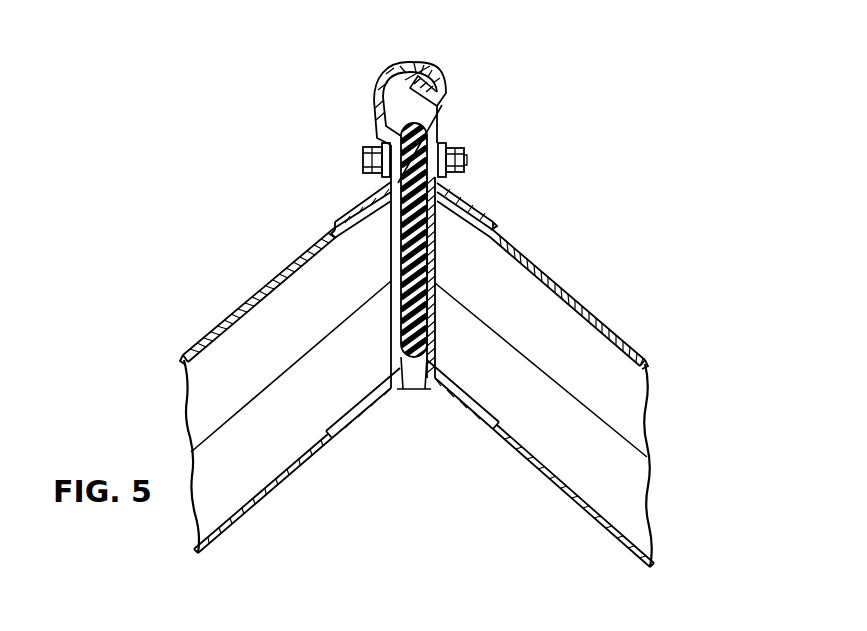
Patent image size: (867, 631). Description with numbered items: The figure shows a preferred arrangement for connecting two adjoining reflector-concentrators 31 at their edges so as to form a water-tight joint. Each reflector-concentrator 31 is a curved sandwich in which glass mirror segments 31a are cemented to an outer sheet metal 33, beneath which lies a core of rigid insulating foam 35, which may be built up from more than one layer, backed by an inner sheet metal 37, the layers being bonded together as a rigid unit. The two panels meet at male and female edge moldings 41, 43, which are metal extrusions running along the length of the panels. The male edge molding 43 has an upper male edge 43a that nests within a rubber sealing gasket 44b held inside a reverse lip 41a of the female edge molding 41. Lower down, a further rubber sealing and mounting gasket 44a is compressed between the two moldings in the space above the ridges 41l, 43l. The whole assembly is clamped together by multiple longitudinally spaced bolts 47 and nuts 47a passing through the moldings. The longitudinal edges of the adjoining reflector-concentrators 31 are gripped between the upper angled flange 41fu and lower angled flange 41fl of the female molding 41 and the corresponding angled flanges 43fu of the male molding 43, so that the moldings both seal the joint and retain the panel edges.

The reflector-concentrator 31 is at (210, 328).
The glass mirror segment 31a is at (303, 247).
The sheet metal 33 is at (645, 372).
The rigid insulating foam 35 is at (641, 490).
The sheet metal 37 is at (607, 533).
The female edge molding 41 is at (378, 108).
The reverse lip 41a is at (448, 90).
The upper angled flange 41fu is at (357, 210).
The lower angled flange 41fl is at (348, 437).
The ridge 41l is at (408, 390).
The male edge molding 43 is at (438, 133).
The upper male edge 43a is at (397, 88).
The upper angled flange 43fu is at (484, 222).
The ridge 43l is at (427, 385).
The rubber sealing and mounting gasket 44a is at (403, 345).
The rubber sealing gasket 44b is at (433, 73).
The bolt 47 is at (363, 160).
The nut 47a is at (465, 162).